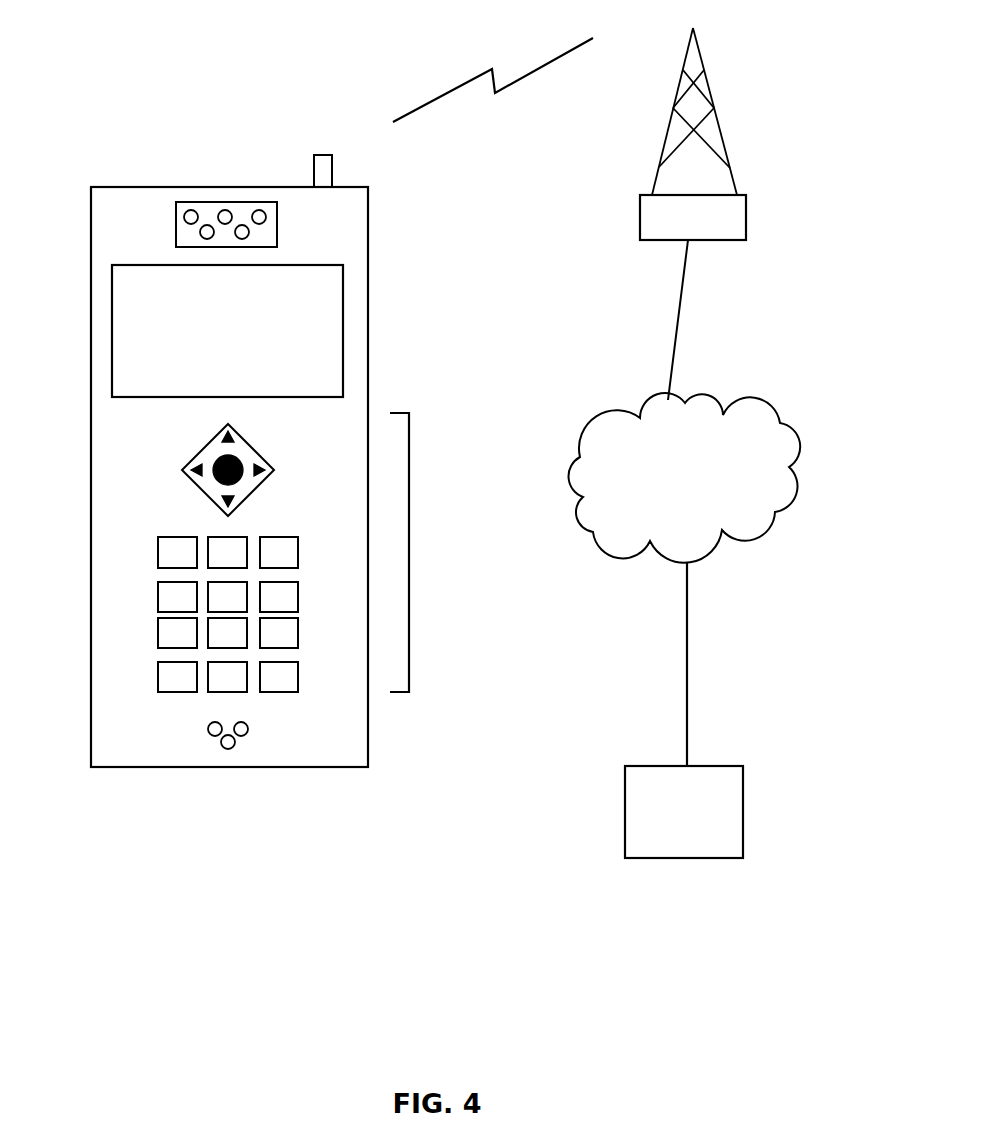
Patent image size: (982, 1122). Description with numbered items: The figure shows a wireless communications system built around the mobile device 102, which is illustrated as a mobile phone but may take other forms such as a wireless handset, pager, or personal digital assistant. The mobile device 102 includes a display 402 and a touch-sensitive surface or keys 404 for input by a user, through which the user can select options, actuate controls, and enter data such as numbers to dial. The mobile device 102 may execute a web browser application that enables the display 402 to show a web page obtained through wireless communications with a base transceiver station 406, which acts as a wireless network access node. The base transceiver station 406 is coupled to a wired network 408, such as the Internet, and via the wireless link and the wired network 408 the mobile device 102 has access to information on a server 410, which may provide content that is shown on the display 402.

The mobile device 102 is at (140, 190).
The display 402 is at (347, 320).
The keys 404 is at (409, 450).
The base transceiver station 406 is at (746, 208).
The wired network 408 is at (797, 427).
The server 410 is at (675, 858).